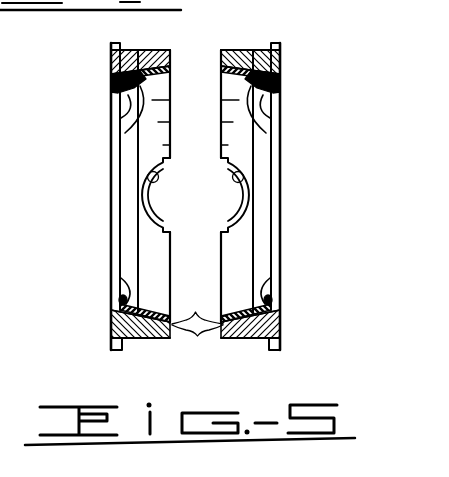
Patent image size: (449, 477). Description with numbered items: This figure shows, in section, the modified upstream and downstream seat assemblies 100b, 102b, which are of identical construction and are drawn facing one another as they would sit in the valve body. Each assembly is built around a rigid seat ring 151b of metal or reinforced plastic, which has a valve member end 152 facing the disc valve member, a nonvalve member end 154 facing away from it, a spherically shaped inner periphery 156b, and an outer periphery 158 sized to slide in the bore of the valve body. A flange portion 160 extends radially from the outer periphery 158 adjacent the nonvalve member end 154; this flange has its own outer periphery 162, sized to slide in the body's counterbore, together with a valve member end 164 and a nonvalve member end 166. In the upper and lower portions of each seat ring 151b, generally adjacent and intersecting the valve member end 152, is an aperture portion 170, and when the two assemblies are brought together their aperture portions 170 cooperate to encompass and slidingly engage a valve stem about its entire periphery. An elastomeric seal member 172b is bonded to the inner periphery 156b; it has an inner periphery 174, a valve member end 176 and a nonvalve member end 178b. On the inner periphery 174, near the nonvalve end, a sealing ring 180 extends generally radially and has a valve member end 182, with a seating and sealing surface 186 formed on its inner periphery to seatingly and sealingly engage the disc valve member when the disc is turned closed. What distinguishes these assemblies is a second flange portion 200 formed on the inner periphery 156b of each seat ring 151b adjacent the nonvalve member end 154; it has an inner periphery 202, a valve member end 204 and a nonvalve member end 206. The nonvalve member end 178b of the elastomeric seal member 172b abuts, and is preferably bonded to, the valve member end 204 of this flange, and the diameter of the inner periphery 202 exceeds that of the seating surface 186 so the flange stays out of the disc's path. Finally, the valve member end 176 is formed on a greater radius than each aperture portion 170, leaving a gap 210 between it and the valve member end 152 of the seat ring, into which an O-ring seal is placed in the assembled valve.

The upstream seat assembly 100b is at (167, 47).
The downstream seat assembly 102b is at (248, 43).
The seat ring 151b is at (144, 328).
The valve member end 152 is at (205, 52).
The nonvalve member end 154 is at (110, 57).
The inner periphery 156b is at (238, 312).
The outer periphery 158 is at (134, 339).
The flange portion 160 is at (111, 338).
The outer periphery 162 is at (111, 347).
The valve member end 164 is at (119, 44).
The nonvalve member end 166 is at (109, 49).
The aperture portion 170 is at (142, 183).
The elastomeric seal member 172b is at (142, 91).
The inner periphery 174 is at (233, 313).
The valve member end 176 is at (195, 303).
The nonvalve member end 178b is at (112, 86).
The sealing ring 180 is at (126, 283).
The valve member end 182 is at (125, 125).
The seating and sealing surface 186 is at (122, 114).
The flange portion 200 is at (112, 80).
The inner periphery 202 is at (117, 101).
The valve member end 204 is at (122, 298).
The nonvalve member end 206 is at (118, 308).
The gap 210 is at (147, 205).